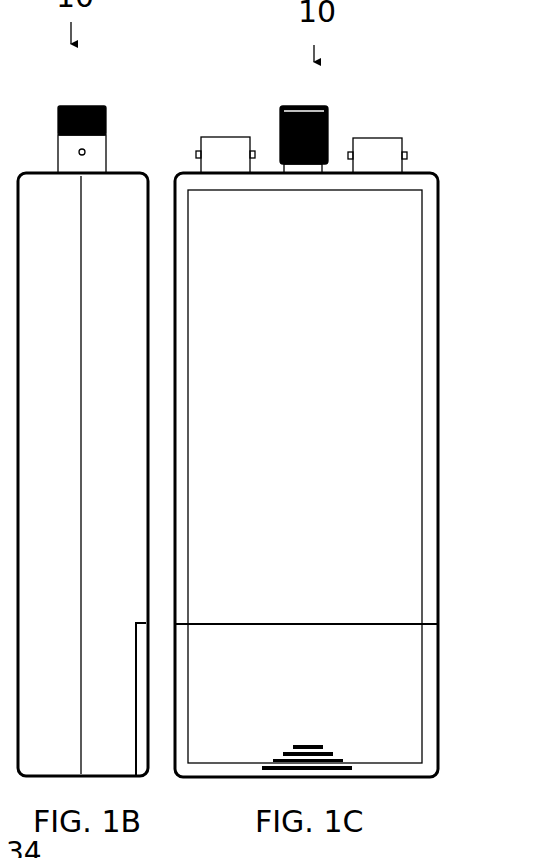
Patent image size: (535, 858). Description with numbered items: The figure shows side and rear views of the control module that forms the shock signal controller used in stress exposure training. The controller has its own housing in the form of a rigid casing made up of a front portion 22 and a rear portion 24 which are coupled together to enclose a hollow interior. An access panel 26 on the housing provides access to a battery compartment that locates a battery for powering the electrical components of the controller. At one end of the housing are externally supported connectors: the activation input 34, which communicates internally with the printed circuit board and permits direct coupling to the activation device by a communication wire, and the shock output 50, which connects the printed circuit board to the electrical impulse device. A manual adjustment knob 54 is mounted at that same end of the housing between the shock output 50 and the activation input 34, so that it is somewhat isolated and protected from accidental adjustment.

In FIG. 1B, the front portion 22 is at (47, 197).
In FIG. 1B, the rear portion 24 is at (126, 193).
In FIG. 1C, the rear portion 24 is at (408, 300).
In FIG. 1B, the access panel 26 is at (147, 752).
In FIG. 1C, the access panel 26 is at (380, 692).
In FIG. 1B, the activation input 34 is at (97, 152).
In FIG. 1C, the activation input 34 is at (221, 145).
In FIG. 1C, the shock output 50 is at (382, 143).
In FIG. 1B, the manual adjustment knob 54 is at (67, 80).
In FIG. 1C, the manual adjustment knob 54 is at (318, 106).